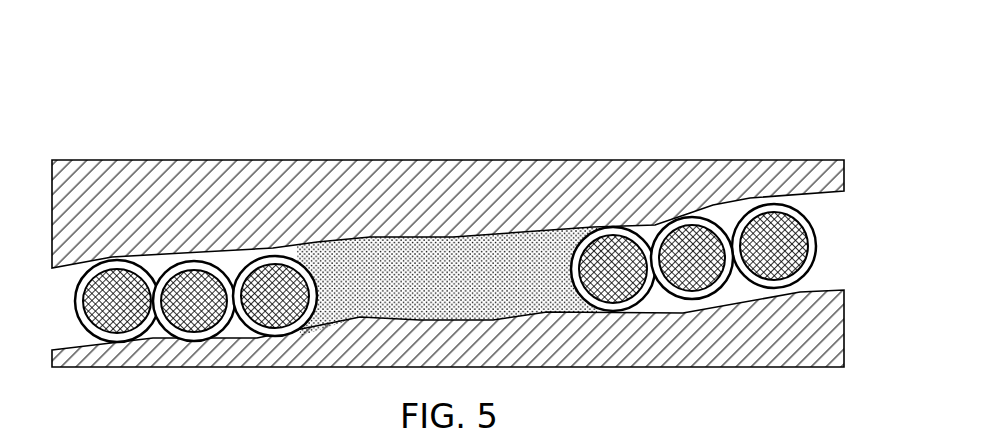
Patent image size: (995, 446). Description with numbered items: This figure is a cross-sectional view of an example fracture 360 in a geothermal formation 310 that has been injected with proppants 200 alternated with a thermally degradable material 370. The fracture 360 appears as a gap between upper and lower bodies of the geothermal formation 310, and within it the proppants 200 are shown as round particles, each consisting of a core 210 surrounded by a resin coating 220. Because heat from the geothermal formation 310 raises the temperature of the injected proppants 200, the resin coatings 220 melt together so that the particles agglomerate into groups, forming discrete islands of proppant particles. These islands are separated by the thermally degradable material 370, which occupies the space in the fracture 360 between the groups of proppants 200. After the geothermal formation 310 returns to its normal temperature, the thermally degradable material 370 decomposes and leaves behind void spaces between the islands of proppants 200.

The proppants 200 is at (157, 283).
The core 210 is at (620, 245).
The resin coating 220 is at (710, 222).
The geothermal formation 310 is at (228, 170).
The fracture 360 is at (827, 210).
The thermally degradable material 370 is at (423, 272).